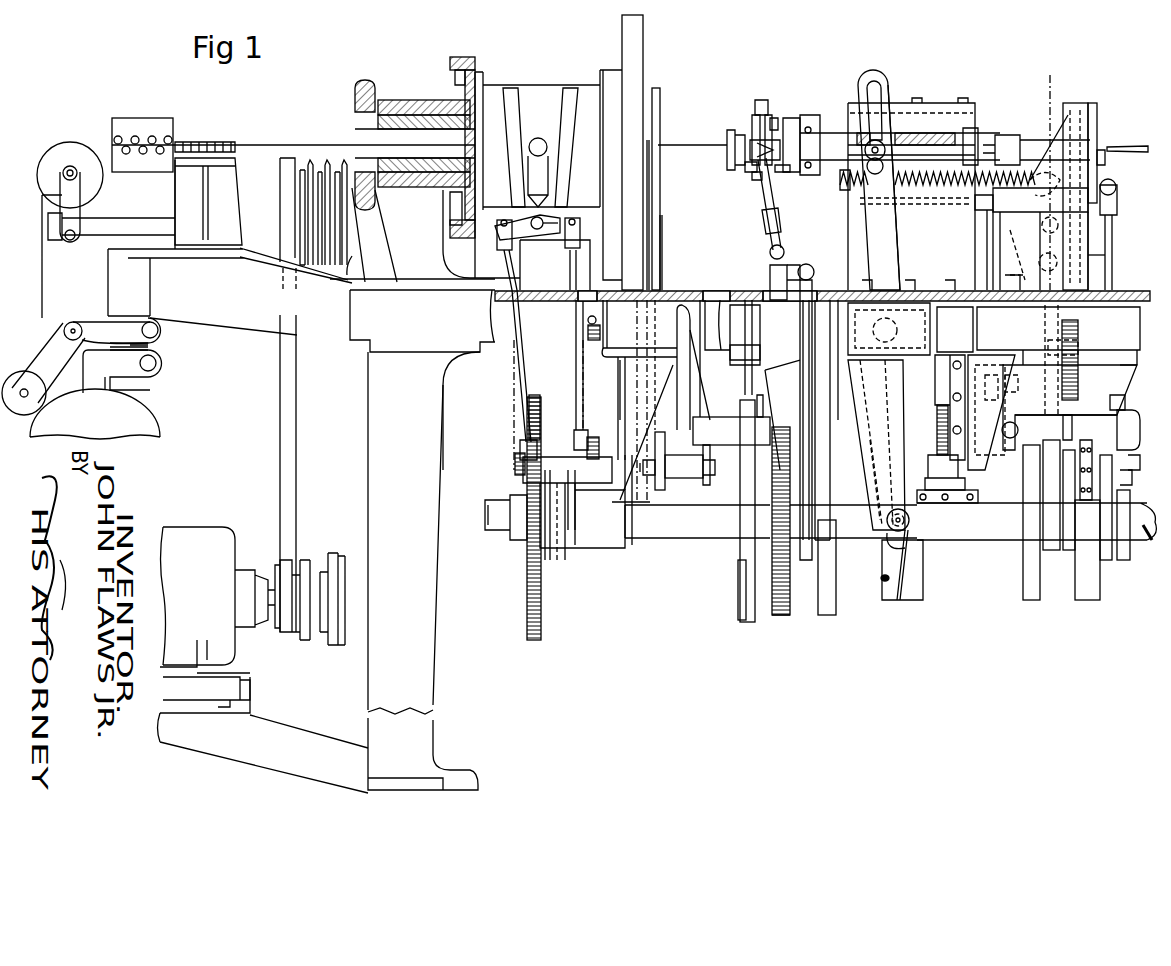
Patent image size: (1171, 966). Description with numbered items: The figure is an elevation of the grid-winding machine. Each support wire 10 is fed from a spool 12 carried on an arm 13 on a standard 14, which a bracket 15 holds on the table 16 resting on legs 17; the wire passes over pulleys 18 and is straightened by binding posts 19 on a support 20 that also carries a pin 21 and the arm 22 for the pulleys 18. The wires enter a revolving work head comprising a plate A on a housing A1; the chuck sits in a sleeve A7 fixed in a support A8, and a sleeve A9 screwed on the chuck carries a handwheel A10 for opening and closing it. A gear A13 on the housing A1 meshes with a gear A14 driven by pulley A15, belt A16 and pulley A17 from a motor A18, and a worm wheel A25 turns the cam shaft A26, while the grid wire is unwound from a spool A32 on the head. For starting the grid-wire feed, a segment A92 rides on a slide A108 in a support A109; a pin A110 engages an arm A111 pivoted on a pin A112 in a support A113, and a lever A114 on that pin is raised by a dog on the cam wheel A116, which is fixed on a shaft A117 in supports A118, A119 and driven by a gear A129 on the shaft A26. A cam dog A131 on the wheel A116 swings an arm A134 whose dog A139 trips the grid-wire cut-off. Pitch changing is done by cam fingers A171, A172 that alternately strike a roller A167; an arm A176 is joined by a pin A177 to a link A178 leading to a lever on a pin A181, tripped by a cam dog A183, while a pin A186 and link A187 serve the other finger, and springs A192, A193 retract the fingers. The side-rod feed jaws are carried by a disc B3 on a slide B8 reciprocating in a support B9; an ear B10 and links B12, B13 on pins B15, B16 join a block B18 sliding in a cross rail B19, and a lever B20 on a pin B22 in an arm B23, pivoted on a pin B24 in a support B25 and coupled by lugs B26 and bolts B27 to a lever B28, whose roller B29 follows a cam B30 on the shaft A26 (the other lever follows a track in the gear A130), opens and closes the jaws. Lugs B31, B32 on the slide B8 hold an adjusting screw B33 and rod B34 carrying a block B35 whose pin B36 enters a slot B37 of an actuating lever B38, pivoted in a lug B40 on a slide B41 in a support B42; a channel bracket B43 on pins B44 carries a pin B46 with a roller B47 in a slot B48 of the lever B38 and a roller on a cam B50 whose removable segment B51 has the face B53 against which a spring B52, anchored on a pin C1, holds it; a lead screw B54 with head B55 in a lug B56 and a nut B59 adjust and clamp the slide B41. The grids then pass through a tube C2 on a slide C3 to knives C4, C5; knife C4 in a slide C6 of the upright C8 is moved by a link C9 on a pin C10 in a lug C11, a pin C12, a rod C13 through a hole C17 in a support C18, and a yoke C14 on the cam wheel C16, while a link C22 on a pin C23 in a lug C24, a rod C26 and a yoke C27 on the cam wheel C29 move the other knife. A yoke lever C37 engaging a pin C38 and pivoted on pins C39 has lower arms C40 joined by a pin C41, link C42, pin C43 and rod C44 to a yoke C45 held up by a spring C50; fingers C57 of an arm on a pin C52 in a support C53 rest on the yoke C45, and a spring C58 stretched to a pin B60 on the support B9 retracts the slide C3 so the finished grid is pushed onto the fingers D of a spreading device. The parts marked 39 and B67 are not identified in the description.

The frame 10 is at (43, 283).
The work piece 12 is at (158, 428).
The lower jaw 13 is at (135, 388).
The upper jaw 14 is at (156, 347).
The lever arm 15 is at (241, 338).
The bed plate 16 is at (368, 352).
The housing 17 is at (438, 592).
The hand wheel 18 is at (60, 142).
The rack block 19 is at (178, 140).
The slide block 20 is at (241, 181).
The shaft 21 is at (138, 218).
The lever 22 is at (84, 210).
The bracket 39 is at (988, 210).
The frame plate A is at (644, 33).
The housing A1 is at (536, 100).
The sleeve A7 is at (430, 100).
The bearing A8 is at (400, 100).
The shaft A9 is at (386, 148).
The collar A10 is at (366, 80).
The bracket A13 is at (468, 57).
The base A14 is at (476, 277).
The pulley A15 is at (316, 160).
The column A16 is at (297, 447).
The motor pulley A17 is at (345, 556).
The motor A18 is at (215, 527).
The gear A25 is at (546, 628).
The shaft A26 is at (660, 540).
The gear box A32 is at (600, 560).
The plate A92 is at (659, 90).
The washer A108 is at (660, 490).
The arm A109 is at (695, 360).
The clutch member A110 is at (682, 478).
The pin A111 is at (708, 485).
The clutch A112 is at (693, 435).
The arm A113 is at (713, 415).
The bracket A114 is at (772, 392).
The plate A116 is at (752, 622).
The shaft A117 is at (700, 540).
The arm A118 is at (812, 372).
The bracket A119 is at (632, 550).
The gear A129 is at (790, 565).
The gear A130 is at (782, 615).
The plate A131 is at (737, 620).
The rod A134 is at (662, 233).
The rod A139 is at (662, 140).
The pin A167 is at (539, 138).
The arm A171 is at (512, 88).
The arm A172 is at (571, 88).
The pivot A176 is at (530, 238).
The block A177 is at (497, 228).
The rod A178 is at (512, 370).
The bracket A181 is at (520, 470).
The lever A183 is at (560, 218).
The block A186 is at (580, 226).
The rod A187 is at (570, 271).
The spring A192 is at (586, 328).
The spring A193 is at (515, 455).
The yoke B3 is at (752, 120).
The shaft B8 is at (795, 118).
The housing B9 is at (943, 103).
The pin B10 is at (775, 118).
The wedge B12 is at (752, 130).
The pin B13 is at (756, 182).
The stud B15 is at (758, 100).
The pin B16 is at (745, 168).
The disc B18 is at (727, 150).
The block B19 is at (782, 172).
The link B20 is at (779, 210).
The pivot B22 is at (784, 250).
The lever B23 is at (770, 280).
The rod B24 is at (838, 330).
The block B25 is at (742, 345).
The arm B26 is at (808, 265).
The pivot B27 is at (814, 272).
The bar B28 is at (812, 290).
The lever B29 is at (830, 348).
The bar B30 is at (828, 615).
The block B31 is at (812, 125).
The collar B32 is at (975, 128).
The rack B33 is at (914, 135).
The shaft B34 is at (912, 155).
The screw B35 is at (907, 128).
The pivot B36 is at (866, 158).
The lever B37 is at (885, 80).
The lever B38 is at (872, 73).
The bracket B40 is at (920, 312).
The post B41 is at (935, 398).
The bracket B42 is at (978, 460).
The lever B43 is at (858, 433).
The block B44 is at (880, 320).
The roller B46 is at (910, 532).
The pin B47 is at (912, 520).
The arm B48 is at (905, 548).
The rod B50 is at (860, 478).
The block B51 is at (918, 600).
The spring B52 is at (918, 180).
The rod B53 is at (897, 575).
The screw B54 is at (935, 432).
The base plate B55 is at (979, 497).
The nut B56 is at (925, 482).
The slot B59 is at (985, 365).
The block B60 is at (850, 212).
The slot B67 is at (993, 392).
The bar C1 is at (1010, 178).
The collar C2 is at (998, 146).
The lever C3 is at (1030, 135).
The plate C4 is at (1098, 140).
The block C5 is at (1105, 160).
The axis C6 is at (1050, 95).
The post C8 is at (1088, 103).
The rod C9 is at (1113, 248).
The block C10 is at (1118, 193).
The pivot C11 is at (1116, 183).
The bar C12 is at (1128, 392).
The block C13 is at (1128, 435).
The plate C14 is at (1130, 510).
The block C16 is at (1100, 598).
The bar C17 is at (1118, 418).
The block C18 is at (1125, 405).
The frame C22 is at (1030, 322).
The gear C23 is at (1056, 262).
The gear C24 is at (1057, 230).
The roller C26 is at (1015, 375).
The post C27 is at (1052, 560).
The block C29 is at (1030, 600).
The link C37 is at (1015, 236).
The cam C38 is at (1042, 197).
The post C39 is at (987, 262).
The bar C40 is at (1095, 263).
The post C41 is at (1090, 265).
The rod C42 is at (1062, 318).
The spring C43 is at (1079, 336).
The pin C44 is at (1073, 437).
The post C45 is at (1070, 560).
The block C50 is at (1075, 352).
The block C52 is at (1128, 470).
The block C53 is at (1128, 485).
The plate C57 is at (1078, 455).
The spring C58 is at (926, 207).
The pointer D is at (1150, 146).